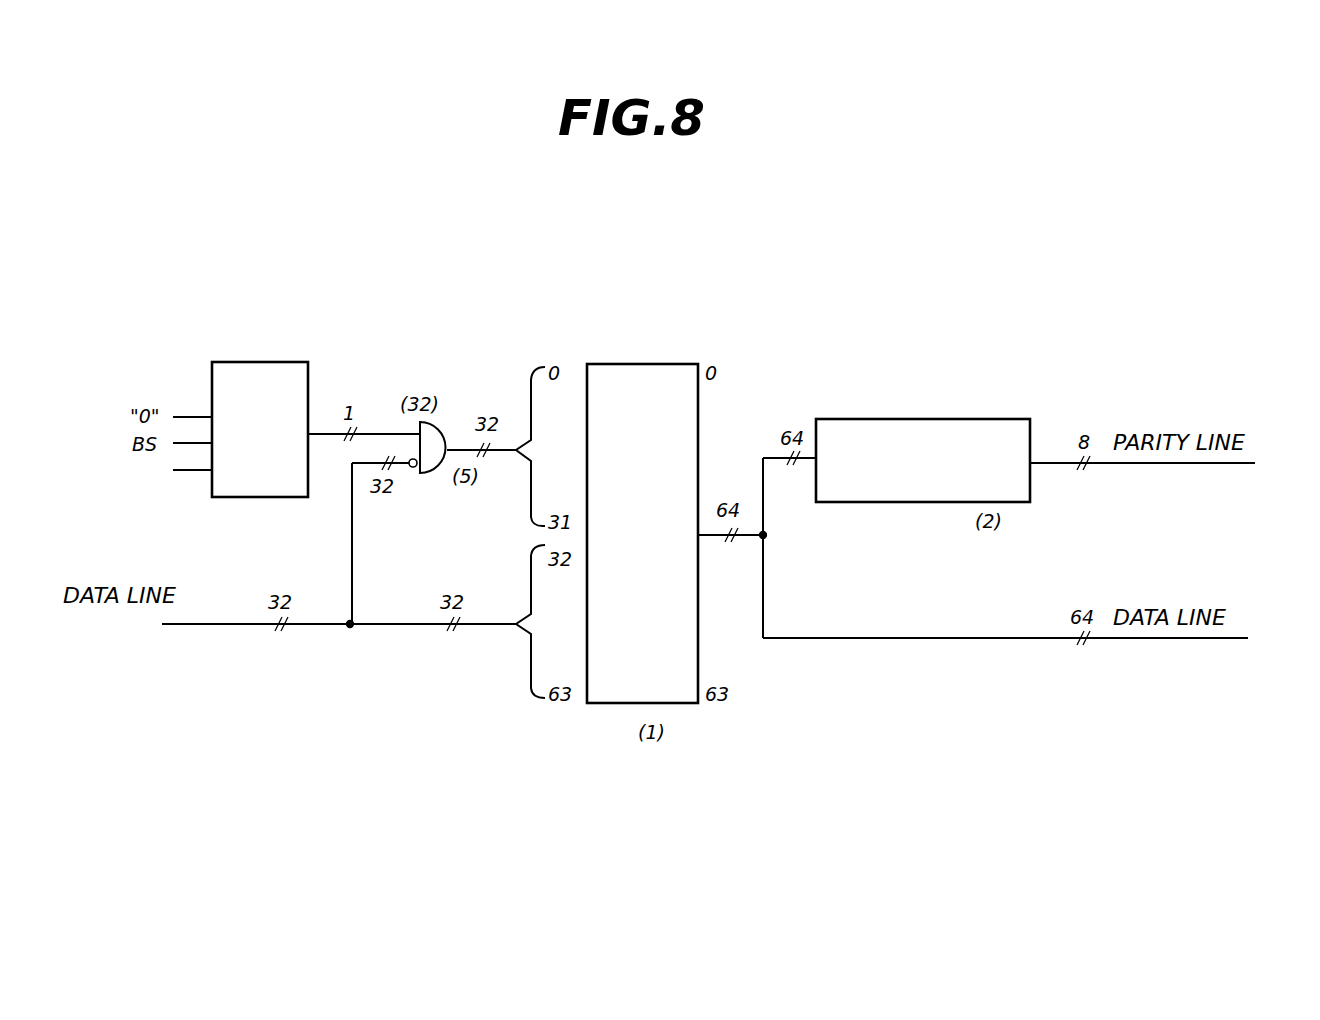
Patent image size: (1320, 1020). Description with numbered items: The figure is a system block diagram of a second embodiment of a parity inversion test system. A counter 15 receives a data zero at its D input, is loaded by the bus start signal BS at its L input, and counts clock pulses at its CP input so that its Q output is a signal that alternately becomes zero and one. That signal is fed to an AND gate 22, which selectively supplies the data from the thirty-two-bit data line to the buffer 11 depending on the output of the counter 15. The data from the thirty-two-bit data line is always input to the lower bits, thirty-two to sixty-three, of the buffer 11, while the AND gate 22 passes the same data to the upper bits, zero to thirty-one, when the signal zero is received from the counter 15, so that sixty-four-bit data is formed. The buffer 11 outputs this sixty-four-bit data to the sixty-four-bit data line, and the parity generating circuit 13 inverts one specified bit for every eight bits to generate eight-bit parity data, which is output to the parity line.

The buffer 11 is at (627, 364).
The parity generating circuit 13 is at (893, 419).
The counter 15 is at (245, 362).
The AND gate 22 is at (430, 473).